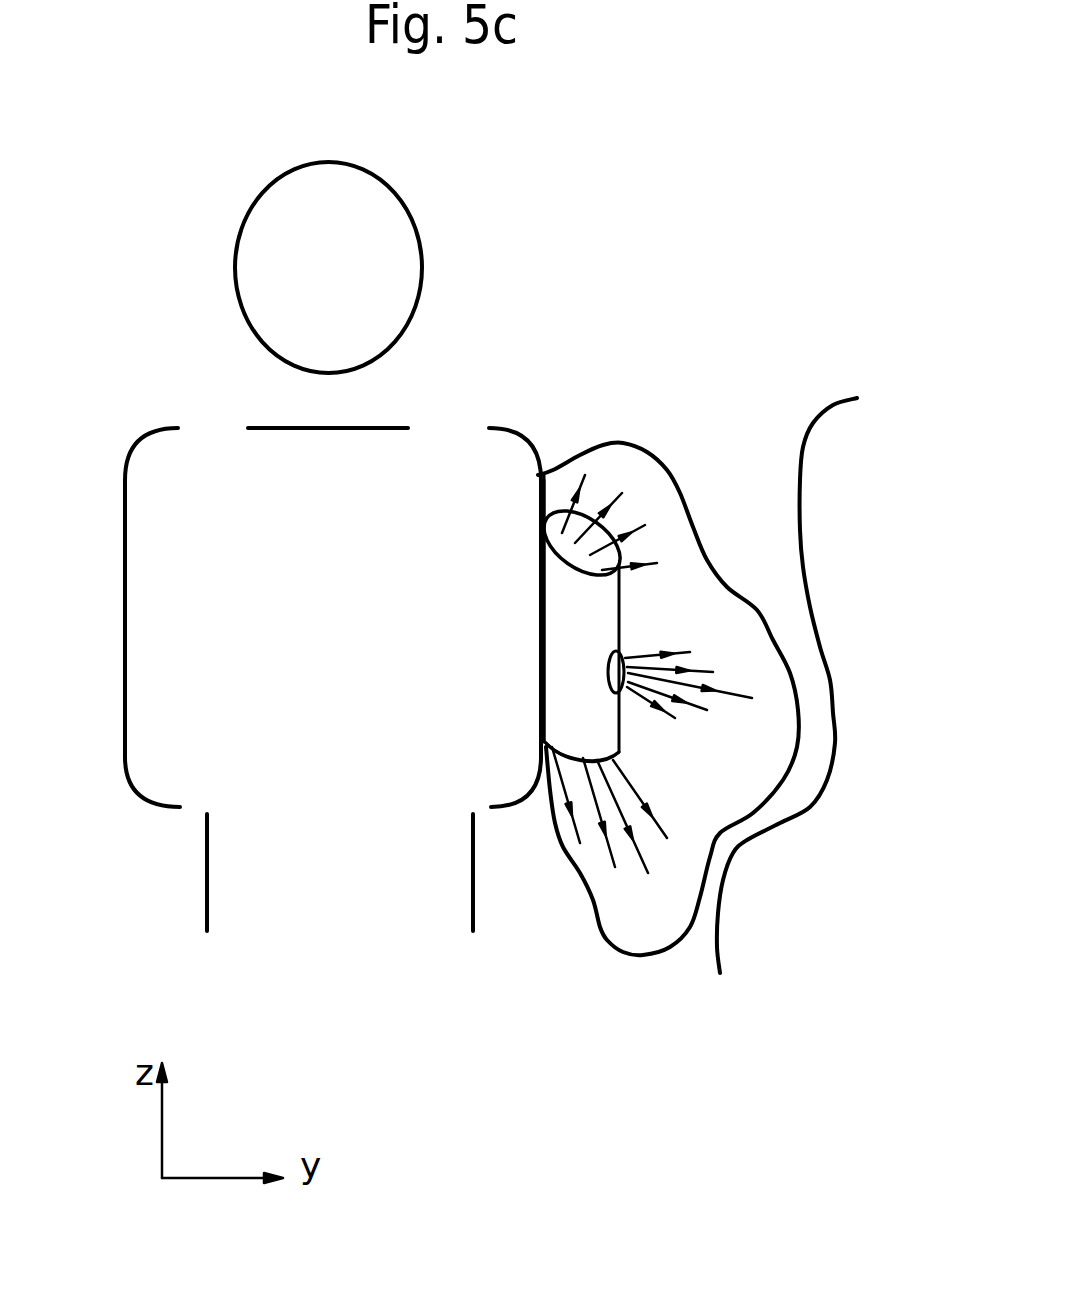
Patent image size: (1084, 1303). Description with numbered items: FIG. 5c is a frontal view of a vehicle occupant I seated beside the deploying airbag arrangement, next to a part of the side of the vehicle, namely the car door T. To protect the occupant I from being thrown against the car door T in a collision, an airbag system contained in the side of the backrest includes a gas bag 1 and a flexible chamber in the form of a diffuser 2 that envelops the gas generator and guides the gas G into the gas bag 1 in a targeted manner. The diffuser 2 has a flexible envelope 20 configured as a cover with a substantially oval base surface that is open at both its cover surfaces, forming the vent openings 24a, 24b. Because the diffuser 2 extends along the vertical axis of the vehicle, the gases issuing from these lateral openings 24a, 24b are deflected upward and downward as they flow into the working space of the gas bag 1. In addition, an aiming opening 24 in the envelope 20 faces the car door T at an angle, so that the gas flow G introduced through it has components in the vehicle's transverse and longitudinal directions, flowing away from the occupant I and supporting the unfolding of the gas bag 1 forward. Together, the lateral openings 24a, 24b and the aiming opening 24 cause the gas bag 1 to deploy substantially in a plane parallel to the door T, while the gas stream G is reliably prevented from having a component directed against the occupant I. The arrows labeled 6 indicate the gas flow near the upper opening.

The vehicle occupant I is at (178, 612).
The gas bag 1 is at (658, 958).
The diffuser 2 is at (592, 662).
The gas outflow 6 is at (600, 510).
The flexible envelope 20 is at (572, 716).
The aiming opening 24 is at (622, 652).
The vent opening 24a is at (558, 525).
The vent opening 24b is at (581, 758).
The gas G is at (655, 645).
The car door T is at (805, 563).